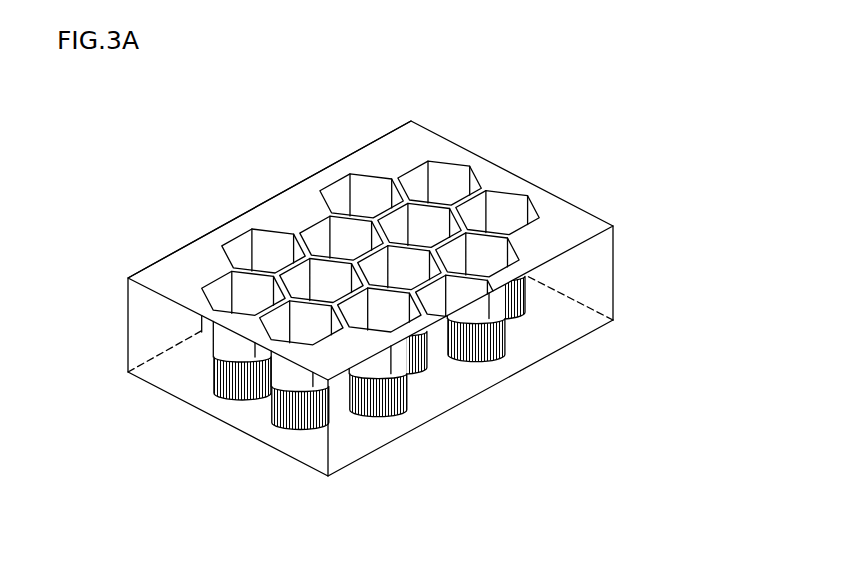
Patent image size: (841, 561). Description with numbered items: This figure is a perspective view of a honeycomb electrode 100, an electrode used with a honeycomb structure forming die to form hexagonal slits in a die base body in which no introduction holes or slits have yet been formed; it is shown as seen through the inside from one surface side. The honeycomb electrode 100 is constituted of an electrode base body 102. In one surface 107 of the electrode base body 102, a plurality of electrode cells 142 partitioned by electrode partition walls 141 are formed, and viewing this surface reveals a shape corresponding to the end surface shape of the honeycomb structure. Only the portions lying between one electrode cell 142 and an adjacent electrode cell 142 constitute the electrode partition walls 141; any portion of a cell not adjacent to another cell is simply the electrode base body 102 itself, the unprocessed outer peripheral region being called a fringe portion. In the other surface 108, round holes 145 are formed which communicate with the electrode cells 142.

The honeycomb electrode 100 is at (598, 148).
The electrode base body 102 is at (606, 262).
The one surface 107 is at (590, 225).
The other surface 108 is at (550, 340).
The electrode partition walls 141 is at (388, 206).
The electrode cells 142 is at (220, 283).
The round holes 145 is at (308, 417).